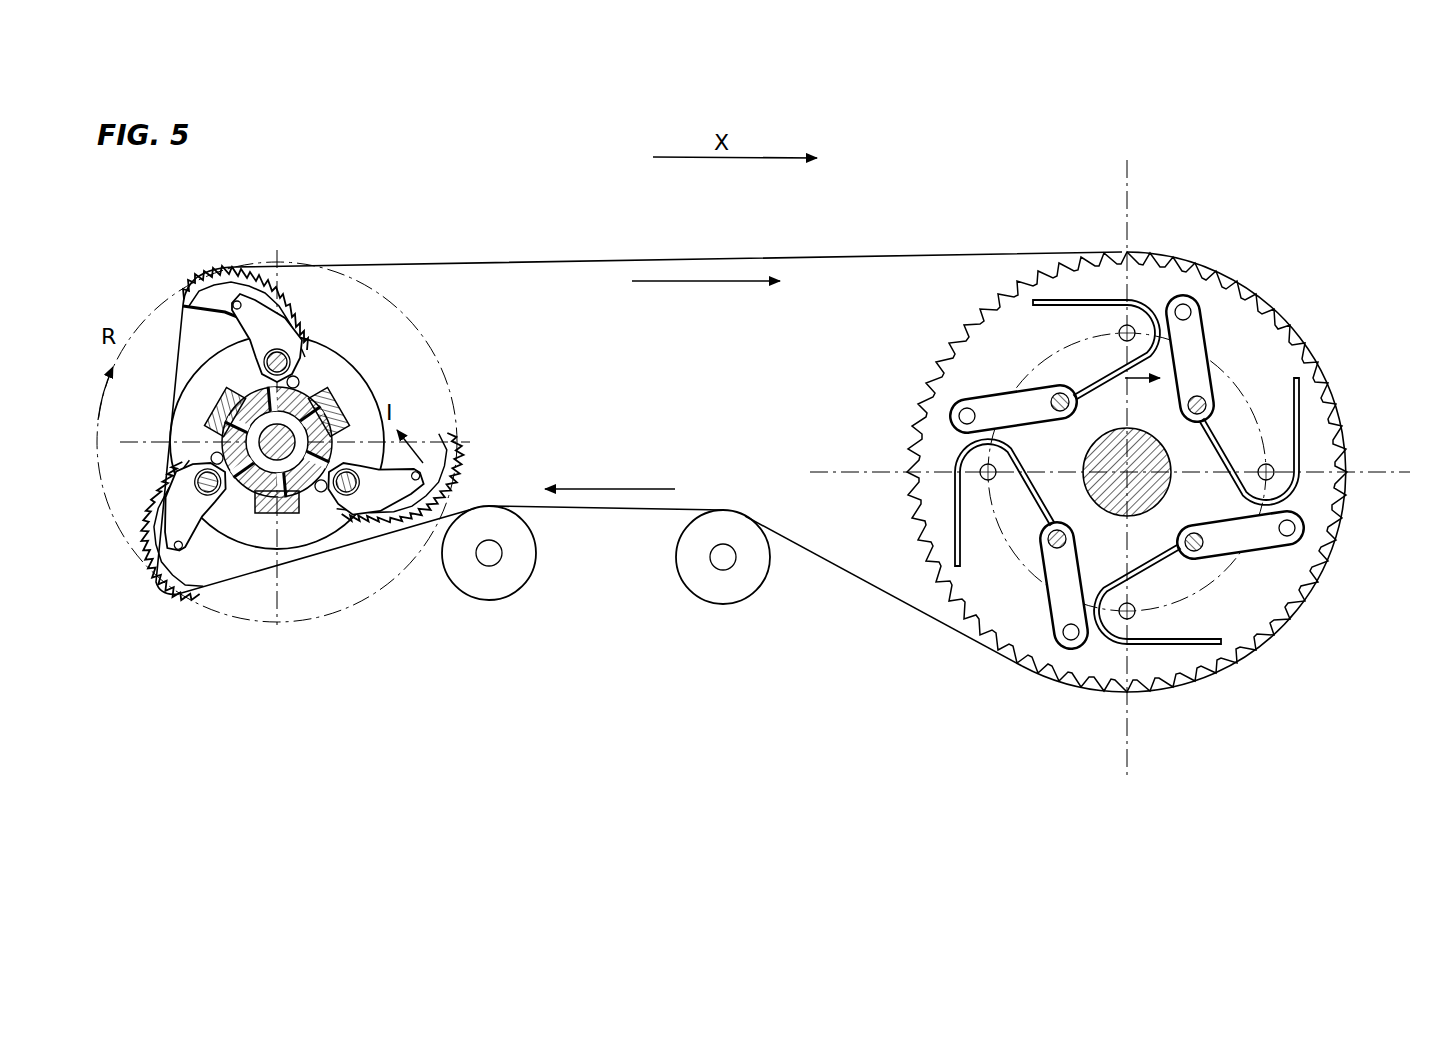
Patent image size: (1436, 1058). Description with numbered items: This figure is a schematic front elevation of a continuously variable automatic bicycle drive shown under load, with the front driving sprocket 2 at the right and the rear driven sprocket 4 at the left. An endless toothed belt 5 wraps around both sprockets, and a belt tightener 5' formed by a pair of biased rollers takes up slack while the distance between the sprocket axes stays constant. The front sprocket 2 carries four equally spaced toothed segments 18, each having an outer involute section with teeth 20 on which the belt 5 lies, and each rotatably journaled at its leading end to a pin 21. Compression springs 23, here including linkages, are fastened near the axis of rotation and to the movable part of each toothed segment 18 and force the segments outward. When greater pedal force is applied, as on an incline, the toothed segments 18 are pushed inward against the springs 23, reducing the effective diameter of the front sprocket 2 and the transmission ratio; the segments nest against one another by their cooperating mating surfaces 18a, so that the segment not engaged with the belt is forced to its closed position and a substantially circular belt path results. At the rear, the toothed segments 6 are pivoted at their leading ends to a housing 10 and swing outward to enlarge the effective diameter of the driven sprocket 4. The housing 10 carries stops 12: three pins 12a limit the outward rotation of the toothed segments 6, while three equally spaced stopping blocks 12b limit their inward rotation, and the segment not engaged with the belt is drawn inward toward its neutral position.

The front driving sprocket 2 is at (1133, 487).
The rear driven sprocket 4 is at (320, 329).
The toothed sprocket belt 5 is at (751, 452).
The belt tightener 5' is at (606, 555).
The toothed segment 6 is at (260, 296).
The housing 10 is at (311, 471).
The housing stops 12 is at (297, 527).
The pin stop 12a is at (317, 492).
The stopping block 12b is at (319, 388).
The front toothed segment 18 is at (1017, 361).
The mating surface 18a is at (1297, 440).
The teeth 20 is at (935, 348).
The pin 21 is at (1118, 333).
The compression spring 23 is at (1025, 412).